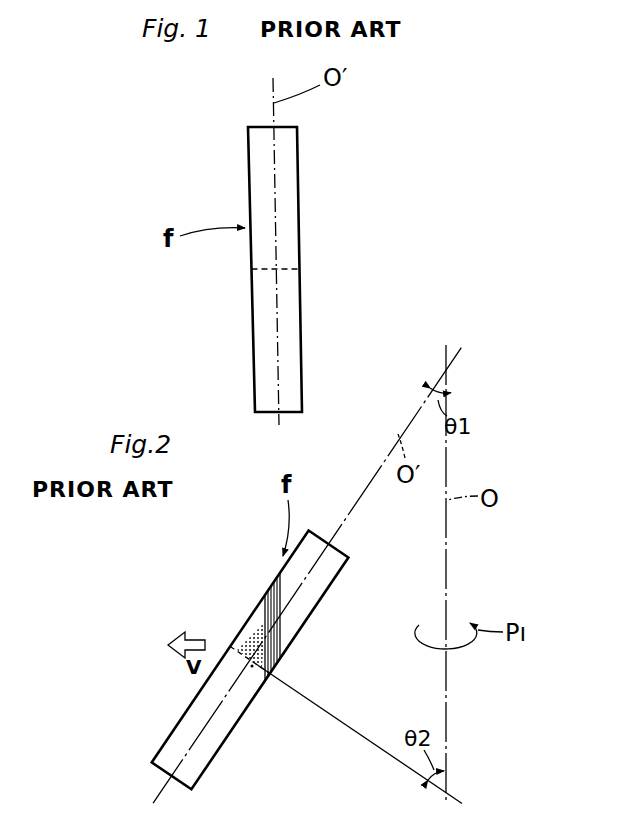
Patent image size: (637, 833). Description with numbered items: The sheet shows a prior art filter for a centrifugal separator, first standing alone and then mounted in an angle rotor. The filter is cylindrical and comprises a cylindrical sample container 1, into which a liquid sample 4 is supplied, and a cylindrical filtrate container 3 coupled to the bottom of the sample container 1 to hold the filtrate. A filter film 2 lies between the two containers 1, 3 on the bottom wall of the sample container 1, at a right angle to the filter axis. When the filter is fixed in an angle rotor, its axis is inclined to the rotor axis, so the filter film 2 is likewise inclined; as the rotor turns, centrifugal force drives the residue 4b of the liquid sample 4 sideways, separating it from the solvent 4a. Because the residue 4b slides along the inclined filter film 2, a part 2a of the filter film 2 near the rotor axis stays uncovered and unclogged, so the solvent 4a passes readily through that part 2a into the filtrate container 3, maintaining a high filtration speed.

In FIG. 1, the sample container 1 is at (287, 168).
In FIG. 2, the sample container 1 is at (322, 570).
In FIG. 1, the filter film 2 is at (288, 267).
In FIG. 2, the filter film 2 is at (253, 654).
In FIG. 2, the part of the filter film 2a is at (255, 673).
In FIG. 1, the filtrate container 3 is at (289, 348).
In FIG. 2, the filtrate container 3 is at (212, 743).
In FIG. 2, the liquid sample 4 is at (278, 634).
In FIG. 2, the solvent 4a is at (270, 597).
In FIG. 2, the residue 4b is at (243, 633).